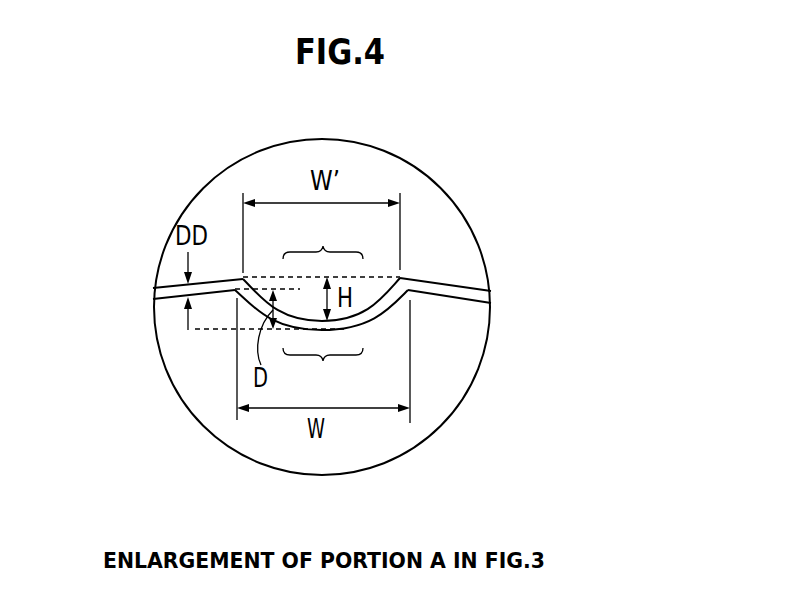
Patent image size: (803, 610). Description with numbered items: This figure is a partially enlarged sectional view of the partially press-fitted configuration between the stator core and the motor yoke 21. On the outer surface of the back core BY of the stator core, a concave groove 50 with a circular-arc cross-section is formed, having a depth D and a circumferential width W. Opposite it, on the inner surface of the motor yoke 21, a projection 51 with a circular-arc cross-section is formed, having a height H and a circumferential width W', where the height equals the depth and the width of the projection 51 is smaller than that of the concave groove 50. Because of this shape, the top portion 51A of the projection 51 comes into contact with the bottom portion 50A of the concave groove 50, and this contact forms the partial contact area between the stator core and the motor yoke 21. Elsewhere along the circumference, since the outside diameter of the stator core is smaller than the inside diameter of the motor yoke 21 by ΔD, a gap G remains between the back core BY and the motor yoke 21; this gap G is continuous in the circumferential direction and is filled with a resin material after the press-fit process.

The motor yoke 21 is at (365, 162).
The back core BY is at (303, 465).
The gap G is at (463, 287).
The projection 51 is at (383, 279).
The concave groove 50 is at (394, 305).
The top portion 51A is at (323, 238).
The bottom portion 50A is at (323, 371).